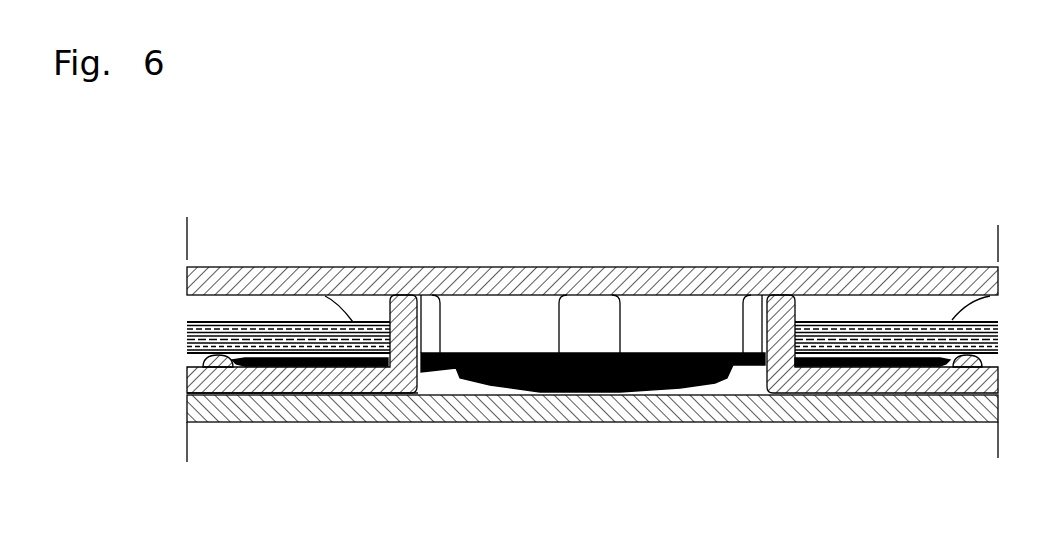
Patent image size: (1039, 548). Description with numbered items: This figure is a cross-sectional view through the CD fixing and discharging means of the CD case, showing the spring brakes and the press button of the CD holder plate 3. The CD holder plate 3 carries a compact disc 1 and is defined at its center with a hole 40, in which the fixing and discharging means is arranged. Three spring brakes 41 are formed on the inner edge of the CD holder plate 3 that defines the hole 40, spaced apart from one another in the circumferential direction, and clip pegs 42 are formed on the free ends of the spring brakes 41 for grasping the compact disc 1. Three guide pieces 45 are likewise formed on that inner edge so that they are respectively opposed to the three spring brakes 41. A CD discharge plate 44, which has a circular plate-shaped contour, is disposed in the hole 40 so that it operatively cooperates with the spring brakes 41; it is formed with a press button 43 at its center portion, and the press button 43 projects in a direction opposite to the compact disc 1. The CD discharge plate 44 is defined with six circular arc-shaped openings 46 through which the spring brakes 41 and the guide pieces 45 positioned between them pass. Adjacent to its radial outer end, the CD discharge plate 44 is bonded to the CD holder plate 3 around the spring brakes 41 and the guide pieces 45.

The compact disc 1 is at (883, 325).
The CD holder plate 3 is at (232, 393).
The hole 40 is at (731, 373).
The spring brakes 41 is at (507, 300).
The clip pegs 42 is at (835, 290).
The press button 43 is at (498, 387).
The CD discharge plate 44 is at (288, 393).
The guide pieces 45 is at (690, 305).
The circular arc-shaped openings 46 is at (427, 295).